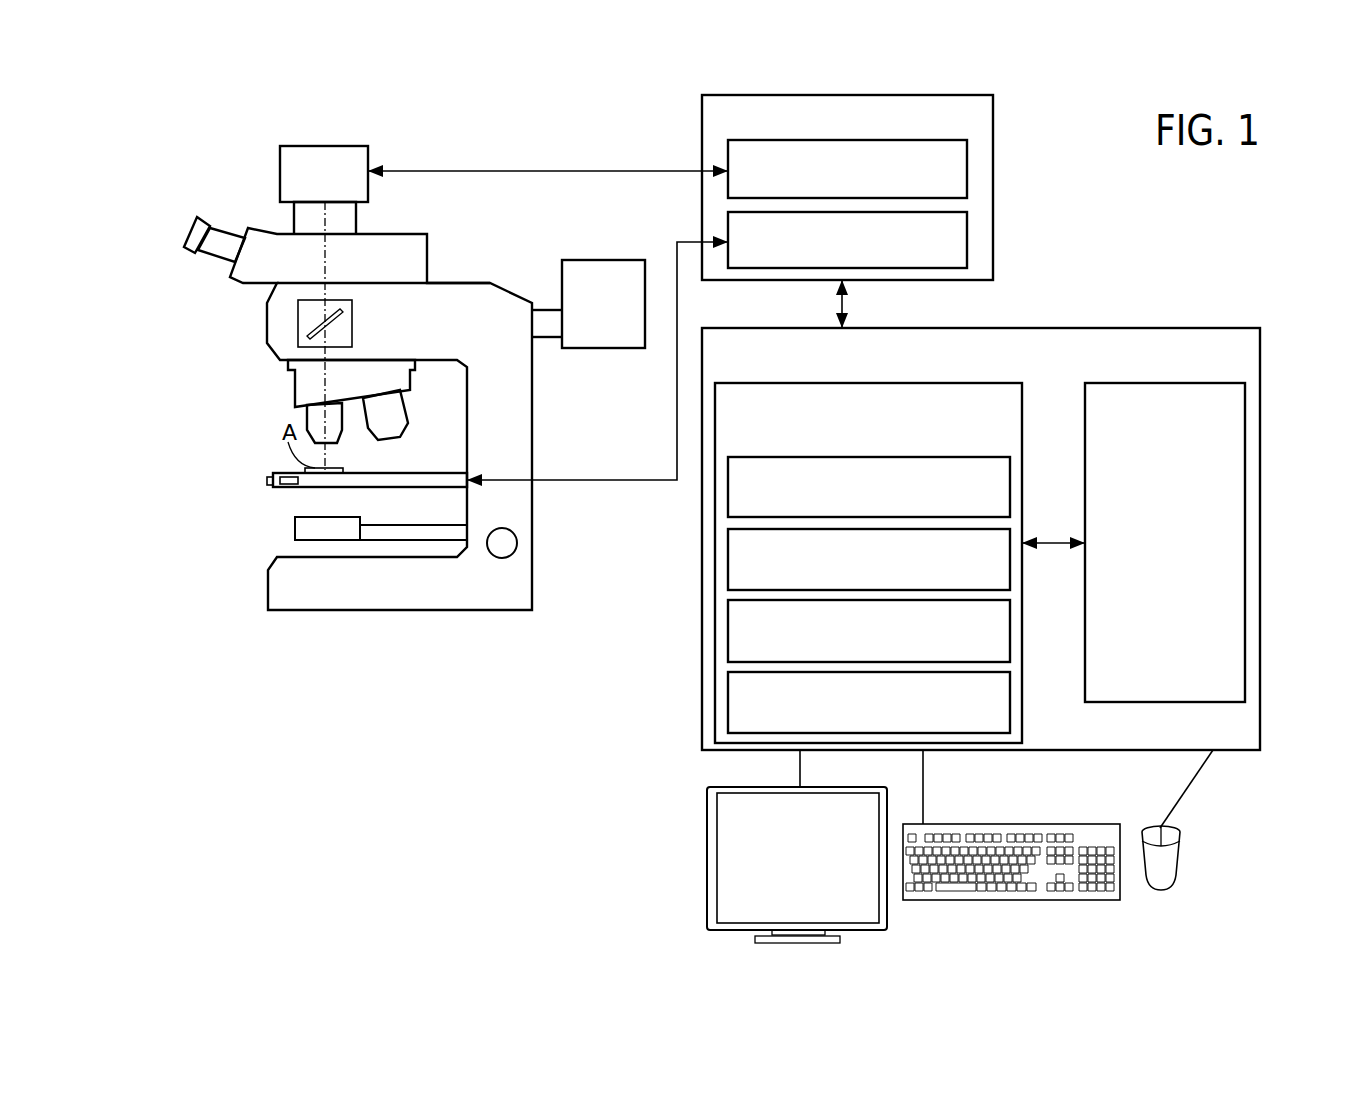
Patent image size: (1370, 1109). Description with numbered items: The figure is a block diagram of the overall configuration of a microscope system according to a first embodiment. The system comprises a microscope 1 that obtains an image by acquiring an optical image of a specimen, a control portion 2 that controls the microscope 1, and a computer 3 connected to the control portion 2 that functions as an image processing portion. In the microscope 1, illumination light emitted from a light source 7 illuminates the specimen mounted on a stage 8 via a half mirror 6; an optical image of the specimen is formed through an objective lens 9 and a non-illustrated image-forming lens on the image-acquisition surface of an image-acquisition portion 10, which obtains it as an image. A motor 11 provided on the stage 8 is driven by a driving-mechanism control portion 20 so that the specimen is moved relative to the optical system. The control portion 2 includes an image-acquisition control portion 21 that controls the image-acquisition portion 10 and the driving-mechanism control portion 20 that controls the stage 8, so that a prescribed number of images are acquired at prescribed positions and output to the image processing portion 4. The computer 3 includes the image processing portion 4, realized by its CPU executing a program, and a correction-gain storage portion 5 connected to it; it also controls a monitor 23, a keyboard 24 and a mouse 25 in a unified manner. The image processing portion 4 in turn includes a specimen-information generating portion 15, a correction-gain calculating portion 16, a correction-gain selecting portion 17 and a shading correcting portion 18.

The microscope 1 is at (240, 397).
The control portion 2 is at (995, 120).
The computer (PC) 3 is at (1150, 328).
The image processing portion 4 is at (757, 383).
The correction-gain storage portion 5 is at (1245, 418).
The half mirror 6 is at (298, 318).
The light source 7 is at (597, 260).
The stage 8 is at (283, 472).
The objective lens 9 is at (342, 435).
The image-acquisition portion 10 is at (370, 153).
The motor 11 is at (267, 480).
The specimen-information generating portion 15 is at (1012, 485).
The correction-gain calculating portion 16 is at (727, 555).
The correction-gain selecting portion 17 is at (727, 625).
The shading correcting portion 18 is at (727, 703).
The driving-mechanism control portion 20 is at (968, 237).
The image-acquisition control portion 21 is at (968, 172).
The monitor 23 is at (707, 852).
The keyboard 24 is at (1015, 822).
The mouse 25 is at (1180, 848).